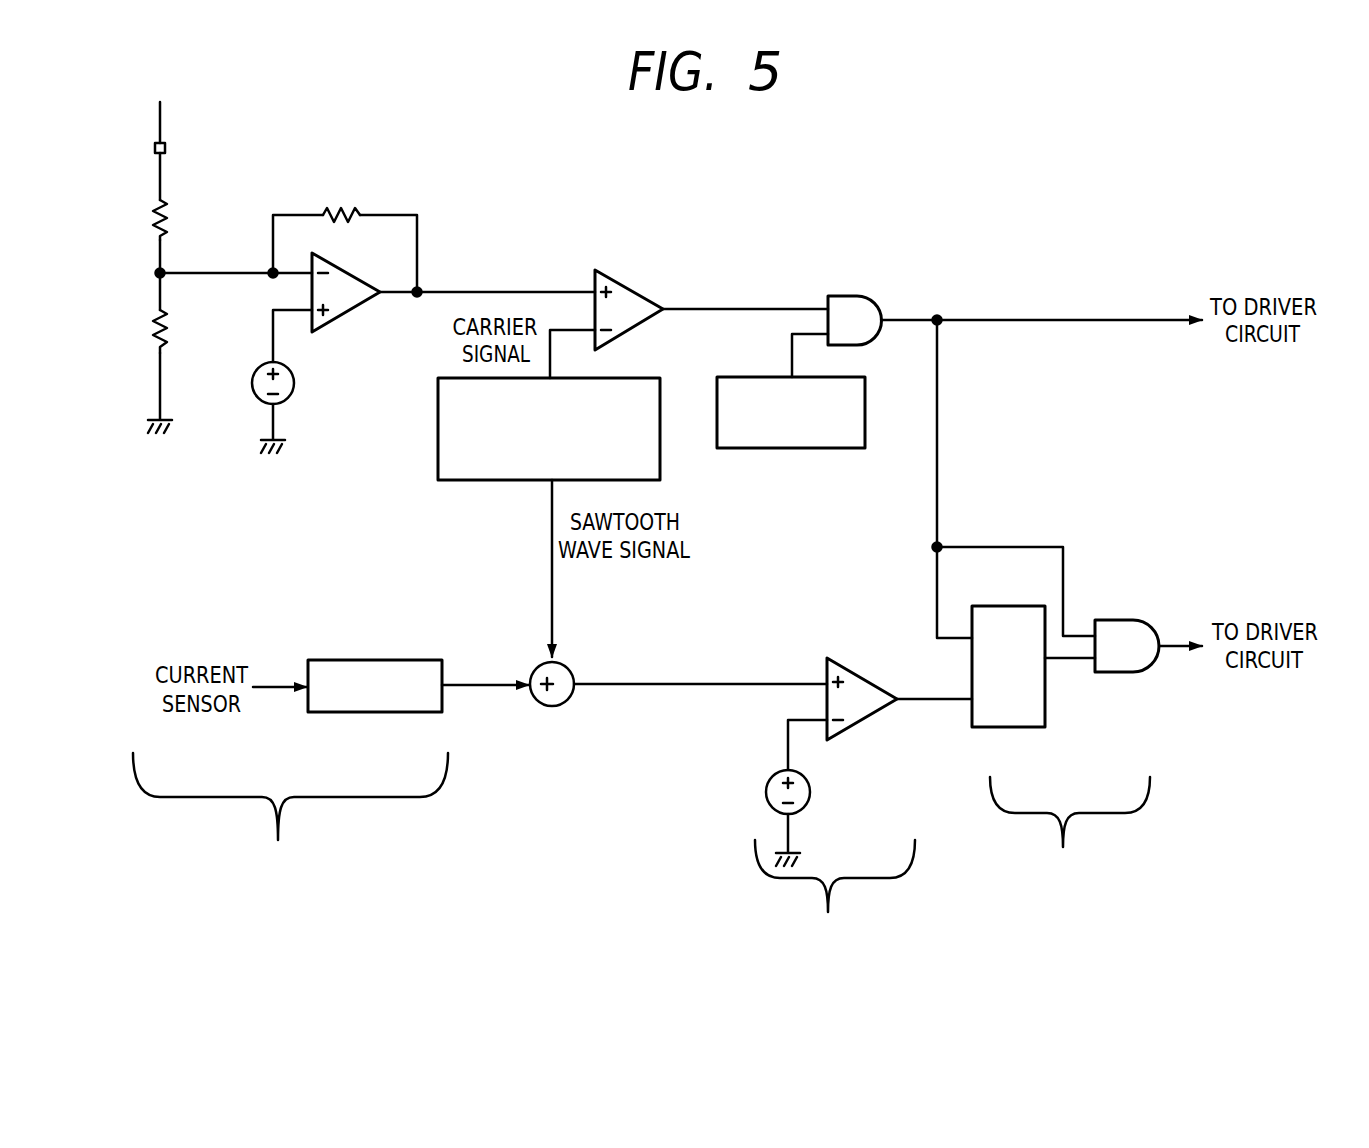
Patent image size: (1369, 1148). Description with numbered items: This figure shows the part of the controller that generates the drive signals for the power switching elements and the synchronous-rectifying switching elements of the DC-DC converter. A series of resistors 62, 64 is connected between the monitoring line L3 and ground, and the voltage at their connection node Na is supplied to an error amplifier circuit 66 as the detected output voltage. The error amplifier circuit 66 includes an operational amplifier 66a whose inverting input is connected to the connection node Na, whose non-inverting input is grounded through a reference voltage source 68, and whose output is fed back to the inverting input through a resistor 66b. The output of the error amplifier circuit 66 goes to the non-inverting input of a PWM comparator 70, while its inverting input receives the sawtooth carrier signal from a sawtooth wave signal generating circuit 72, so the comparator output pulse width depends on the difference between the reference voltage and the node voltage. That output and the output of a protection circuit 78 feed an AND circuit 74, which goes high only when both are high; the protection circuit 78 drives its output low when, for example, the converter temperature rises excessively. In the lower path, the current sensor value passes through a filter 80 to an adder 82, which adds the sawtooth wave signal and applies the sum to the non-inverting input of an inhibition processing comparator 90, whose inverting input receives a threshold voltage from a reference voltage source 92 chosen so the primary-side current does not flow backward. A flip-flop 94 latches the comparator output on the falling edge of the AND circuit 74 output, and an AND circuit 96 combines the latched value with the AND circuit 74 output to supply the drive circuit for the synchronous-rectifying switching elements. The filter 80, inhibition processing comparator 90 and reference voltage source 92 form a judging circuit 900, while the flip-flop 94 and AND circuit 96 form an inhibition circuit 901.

The monitoring line L3 is at (162, 123).
The resistor 62 is at (152, 220).
The resistor 64 is at (152, 332).
The connection node Na is at (155, 273).
The error amplifier circuit 66 is at (376, 232).
The operational amplifier 66a is at (350, 318).
The resistor 66b is at (338, 210).
The reference voltage source 68 is at (295, 383).
The PWM comparator 70 is at (630, 282).
The sawtooth wave signal generating circuit 72 is at (437, 430).
The AND circuit 74 is at (850, 295).
The protection circuit 78 is at (793, 450).
The filter 80 is at (370, 713).
The adder 82 is at (552, 707).
The inhibition processing comparator 90 is at (865, 722).
The reference voltage source 92 is at (810, 792).
The flip-flop 94 is at (1008, 728).
The AND circuit 96 is at (1120, 673).
The judging circuit 900 is at (524, 849).
The inhibition circuit 901 is at (1070, 828).